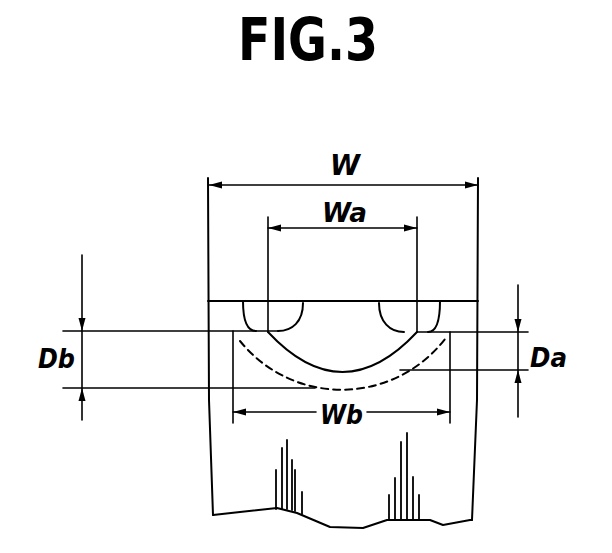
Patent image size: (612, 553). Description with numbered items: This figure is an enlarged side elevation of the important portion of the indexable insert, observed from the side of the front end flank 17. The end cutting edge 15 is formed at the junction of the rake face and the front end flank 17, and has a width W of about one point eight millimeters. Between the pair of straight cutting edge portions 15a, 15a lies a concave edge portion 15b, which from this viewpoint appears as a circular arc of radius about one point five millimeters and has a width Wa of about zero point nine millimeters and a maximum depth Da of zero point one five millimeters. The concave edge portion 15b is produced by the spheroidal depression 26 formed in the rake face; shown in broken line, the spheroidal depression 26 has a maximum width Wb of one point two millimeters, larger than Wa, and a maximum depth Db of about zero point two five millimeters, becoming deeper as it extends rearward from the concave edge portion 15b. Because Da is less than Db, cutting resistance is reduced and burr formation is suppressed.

The end cutting edge 15 is at (224, 322).
The straight cutting edge portion 15a is at (243, 301).
The concave edge portion 15b is at (375, 356).
The front end flank 17 is at (270, 460).
The spheroidal depression 26 is at (340, 387).